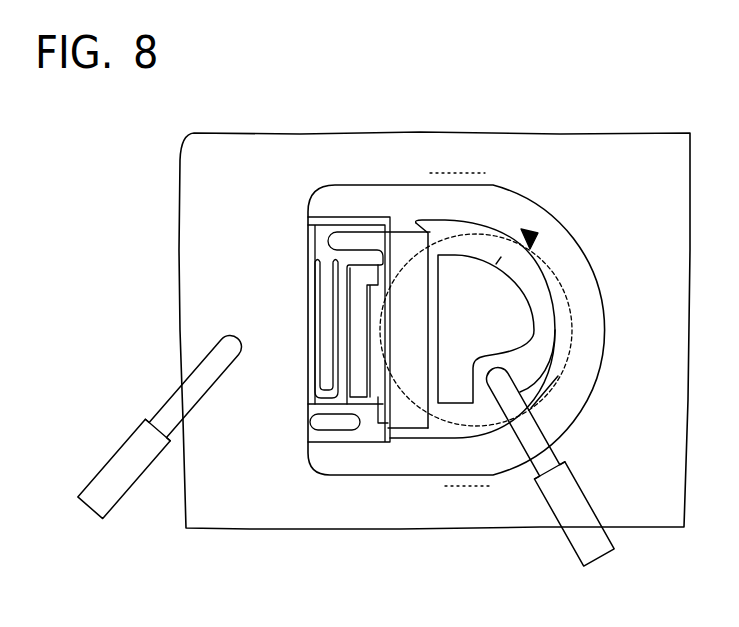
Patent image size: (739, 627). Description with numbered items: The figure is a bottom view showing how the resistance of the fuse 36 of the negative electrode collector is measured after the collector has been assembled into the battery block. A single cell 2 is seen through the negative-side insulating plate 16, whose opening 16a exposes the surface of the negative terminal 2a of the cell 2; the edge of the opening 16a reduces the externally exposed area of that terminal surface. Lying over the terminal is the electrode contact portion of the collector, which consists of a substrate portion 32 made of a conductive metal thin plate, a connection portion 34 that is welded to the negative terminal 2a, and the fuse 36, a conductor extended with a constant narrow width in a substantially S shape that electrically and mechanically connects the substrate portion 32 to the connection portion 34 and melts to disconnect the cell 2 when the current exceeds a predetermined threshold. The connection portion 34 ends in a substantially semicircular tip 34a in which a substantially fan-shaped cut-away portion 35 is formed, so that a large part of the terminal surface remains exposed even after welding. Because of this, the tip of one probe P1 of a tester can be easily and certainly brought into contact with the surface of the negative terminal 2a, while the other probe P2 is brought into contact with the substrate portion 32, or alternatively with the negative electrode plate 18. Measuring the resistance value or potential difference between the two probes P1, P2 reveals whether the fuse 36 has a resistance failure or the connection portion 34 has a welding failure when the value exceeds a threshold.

The cell 2 is at (531, 232).
The negative terminal 2a is at (498, 255).
The negative-side insulating plate 16 is at (402, 460).
The opening 16a is at (537, 265).
The negative electrode plate 18 is at (397, 330).
The substrate portion 32 is at (190, 323).
The connection portion 34 is at (530, 310).
The tip 34a is at (513, 362).
The cut-away portion 35 is at (530, 406).
The fuse 36 is at (337, 263).
The probe P1 is at (552, 513).
The probe P2 is at (138, 490).